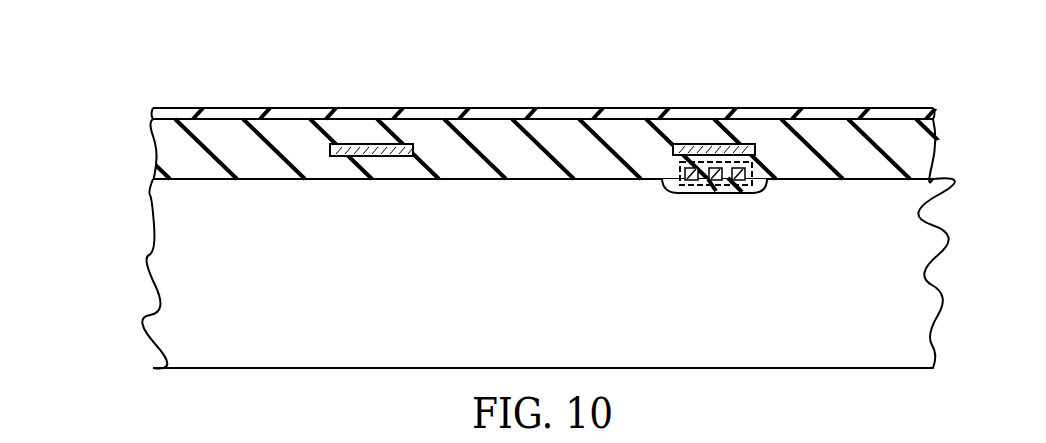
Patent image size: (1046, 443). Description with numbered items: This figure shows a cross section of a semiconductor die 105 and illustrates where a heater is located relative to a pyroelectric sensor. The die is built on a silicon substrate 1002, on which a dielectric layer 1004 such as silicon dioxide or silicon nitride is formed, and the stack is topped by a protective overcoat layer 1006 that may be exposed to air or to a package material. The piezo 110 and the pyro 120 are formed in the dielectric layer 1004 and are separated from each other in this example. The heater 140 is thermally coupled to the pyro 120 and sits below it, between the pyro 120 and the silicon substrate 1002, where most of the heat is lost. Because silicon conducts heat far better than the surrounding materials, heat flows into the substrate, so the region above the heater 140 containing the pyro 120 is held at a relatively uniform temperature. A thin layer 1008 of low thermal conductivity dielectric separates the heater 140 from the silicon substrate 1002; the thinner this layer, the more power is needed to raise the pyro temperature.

The semiconductor die 105 is at (518, 191).
The piezo 110 is at (353, 144).
The pyro 120 is at (703, 144).
The heater 140 is at (707, 187).
The silicon substrate 1002 is at (148, 276).
The dielectric layer 1004 is at (150, 150).
The protective overcoat layer 1006 is at (153, 112).
The thin layer 1008 is at (757, 194).